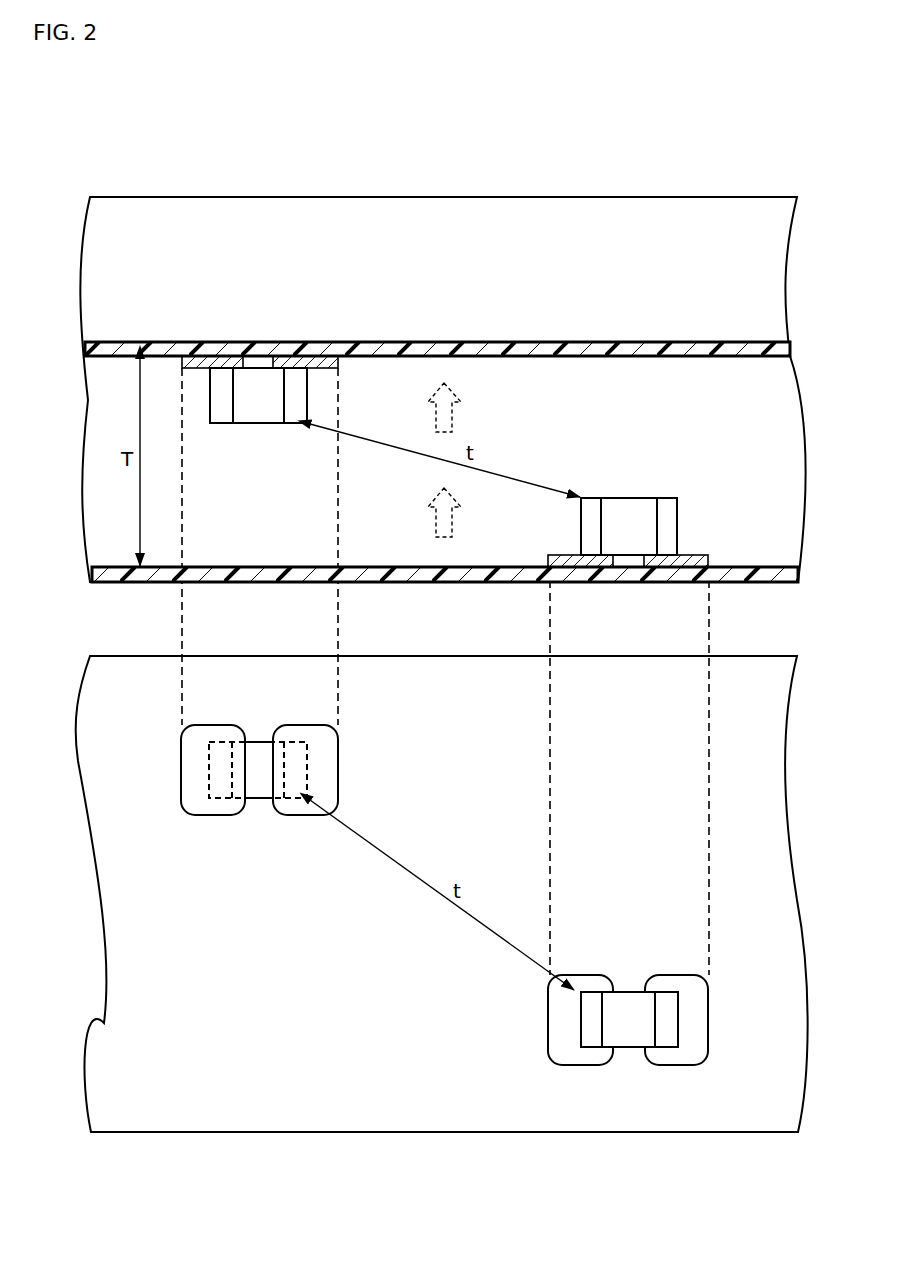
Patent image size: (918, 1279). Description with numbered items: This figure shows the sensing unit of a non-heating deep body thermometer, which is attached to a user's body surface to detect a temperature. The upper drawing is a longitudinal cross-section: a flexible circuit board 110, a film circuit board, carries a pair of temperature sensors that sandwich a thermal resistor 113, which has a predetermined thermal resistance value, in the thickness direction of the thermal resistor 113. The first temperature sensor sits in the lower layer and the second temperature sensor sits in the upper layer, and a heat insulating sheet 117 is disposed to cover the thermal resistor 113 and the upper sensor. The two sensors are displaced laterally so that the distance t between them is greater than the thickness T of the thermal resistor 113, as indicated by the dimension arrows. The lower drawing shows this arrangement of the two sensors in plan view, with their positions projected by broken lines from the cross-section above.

The heat insulating sheet 117 is at (652, 205).
The flexible circuit board 110 is at (474, 342).
The thermal resistor 113 is at (266, 555).